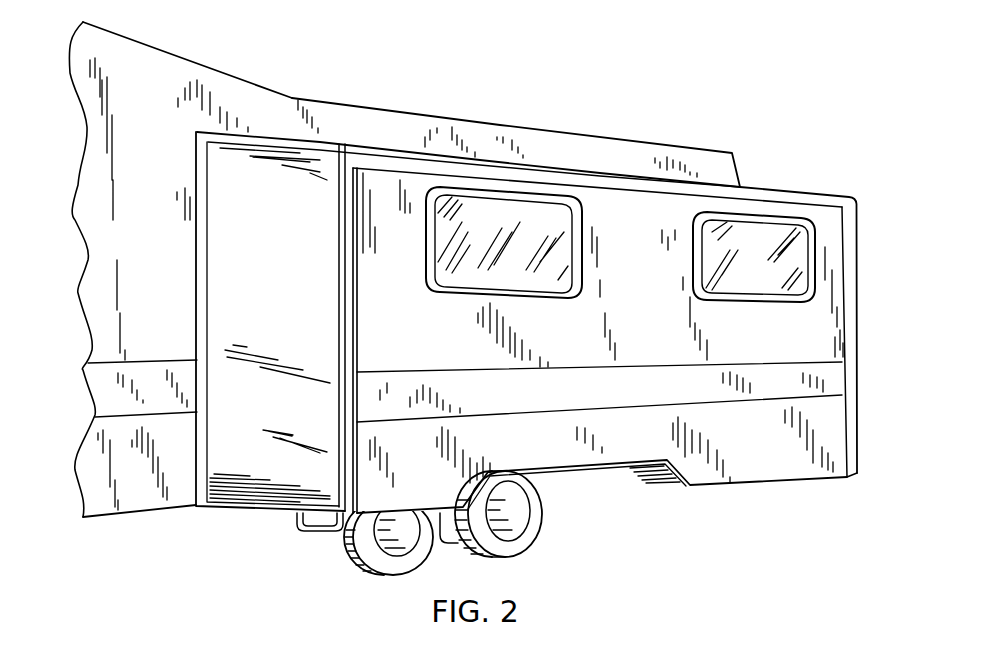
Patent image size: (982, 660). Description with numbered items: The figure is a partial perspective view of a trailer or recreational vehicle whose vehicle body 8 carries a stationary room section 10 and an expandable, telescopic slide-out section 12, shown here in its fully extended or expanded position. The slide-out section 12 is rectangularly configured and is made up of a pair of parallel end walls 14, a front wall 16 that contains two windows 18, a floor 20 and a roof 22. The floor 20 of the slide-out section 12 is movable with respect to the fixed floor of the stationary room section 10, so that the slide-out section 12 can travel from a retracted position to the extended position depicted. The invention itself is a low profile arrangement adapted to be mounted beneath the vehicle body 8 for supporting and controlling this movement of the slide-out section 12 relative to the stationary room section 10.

The vehicle body 8 is at (642, 116).
The stationary room section 10 is at (176, 323).
The slide-out section 12 is at (815, 190).
The end walls 14 is at (272, 457).
The front wall 16 is at (635, 385).
The windows 18 is at (578, 297).
The floor 20 is at (750, 483).
The roof 22 is at (445, 157).